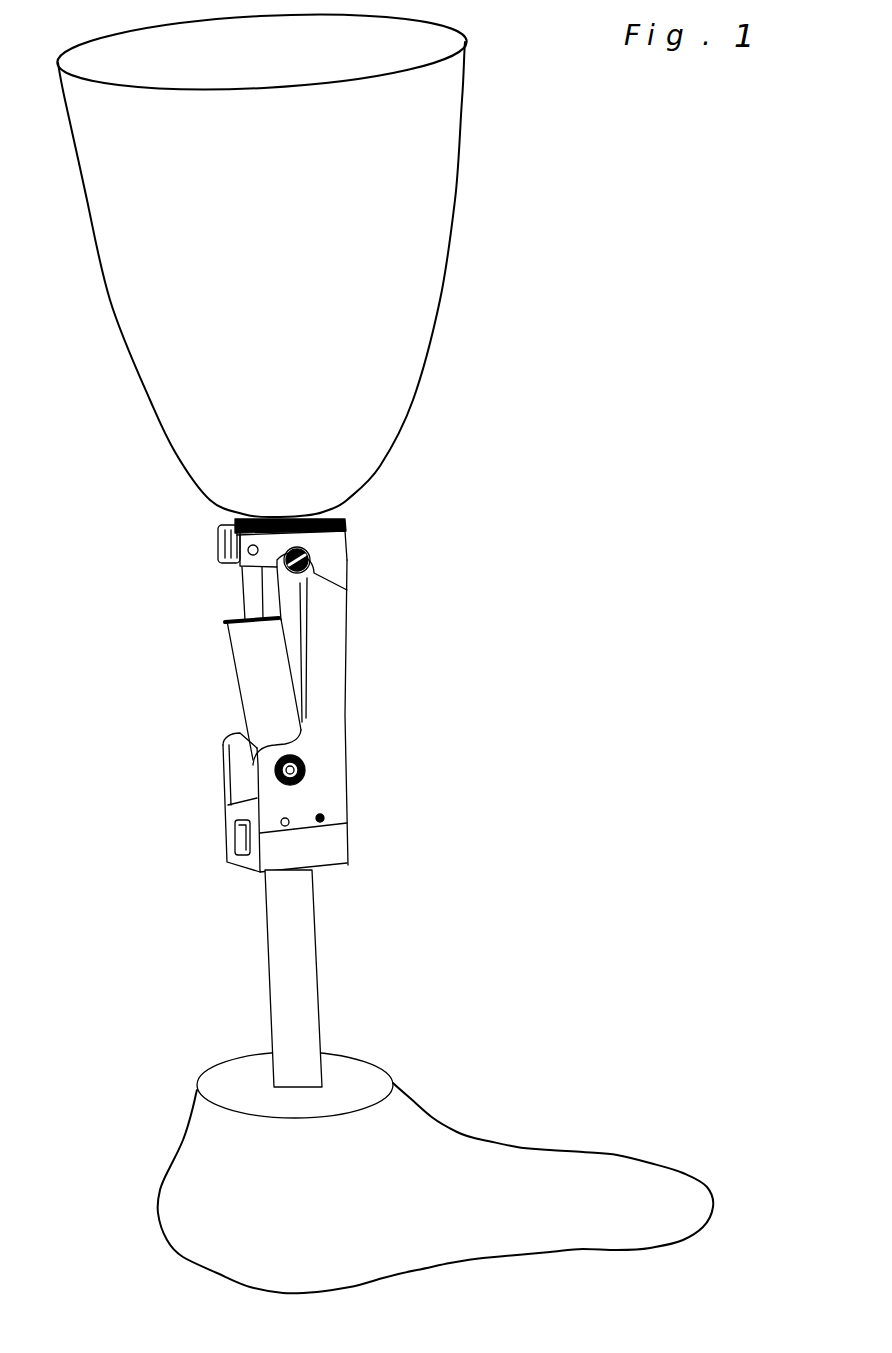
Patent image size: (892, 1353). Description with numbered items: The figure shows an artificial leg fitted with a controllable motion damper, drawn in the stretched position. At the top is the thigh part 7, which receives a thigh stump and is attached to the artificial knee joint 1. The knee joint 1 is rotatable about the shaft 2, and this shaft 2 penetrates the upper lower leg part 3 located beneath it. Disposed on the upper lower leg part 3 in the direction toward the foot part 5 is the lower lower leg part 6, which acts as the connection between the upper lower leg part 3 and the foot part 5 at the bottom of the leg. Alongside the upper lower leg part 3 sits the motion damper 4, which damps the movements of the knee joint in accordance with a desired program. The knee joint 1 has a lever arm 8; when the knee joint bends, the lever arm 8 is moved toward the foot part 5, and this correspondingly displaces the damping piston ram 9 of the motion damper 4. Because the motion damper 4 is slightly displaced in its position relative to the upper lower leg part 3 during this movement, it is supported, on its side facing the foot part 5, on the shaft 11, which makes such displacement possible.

The artificial knee joint 1 is at (335, 542).
The shaft 2 is at (312, 568).
The upper lower leg part 3 is at (330, 697).
The motion damper 4 is at (250, 688).
The foot part 5 is at (490, 1162).
The lower lower leg part 6 is at (303, 957).
The thigh part 7 is at (412, 327).
The lever arm 8 is at (215, 532).
The damping piston ram 9 is at (243, 587).
The shaft 11 is at (305, 772).